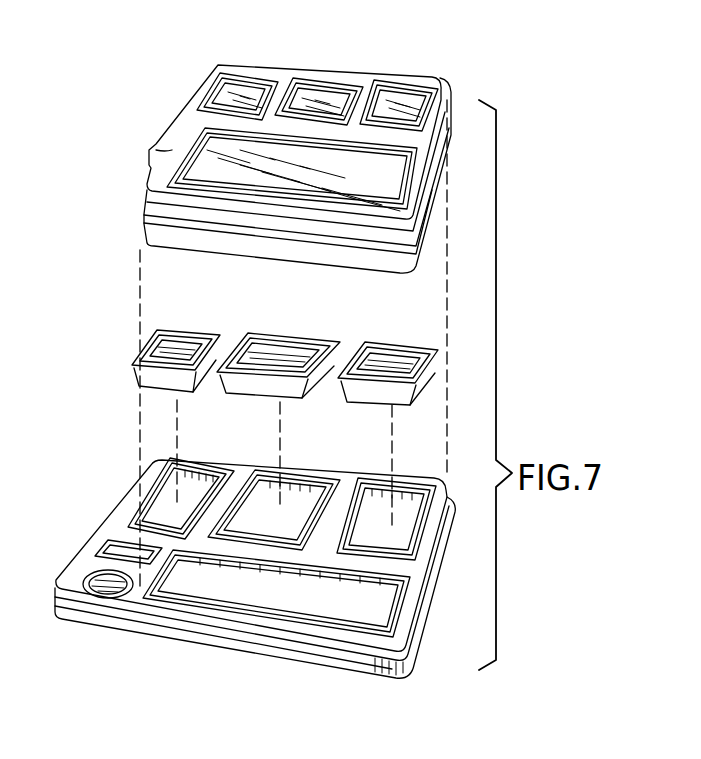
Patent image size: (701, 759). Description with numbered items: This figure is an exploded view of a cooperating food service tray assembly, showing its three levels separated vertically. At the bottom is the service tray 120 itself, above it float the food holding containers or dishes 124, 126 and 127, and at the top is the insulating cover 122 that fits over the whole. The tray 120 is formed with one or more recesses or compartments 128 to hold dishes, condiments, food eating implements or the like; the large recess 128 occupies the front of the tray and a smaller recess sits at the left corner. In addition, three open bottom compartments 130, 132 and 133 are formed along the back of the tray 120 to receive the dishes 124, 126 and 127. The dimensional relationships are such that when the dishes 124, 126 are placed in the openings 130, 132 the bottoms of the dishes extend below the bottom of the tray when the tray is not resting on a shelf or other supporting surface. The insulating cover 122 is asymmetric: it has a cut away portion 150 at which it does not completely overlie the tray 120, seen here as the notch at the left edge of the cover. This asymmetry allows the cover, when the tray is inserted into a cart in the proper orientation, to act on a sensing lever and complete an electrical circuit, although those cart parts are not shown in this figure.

The service tray 120 is at (162, 625).
The insulating cover 122 is at (362, 75).
The food holding dish 124 is at (186, 327).
The food holding dish 126 is at (297, 336).
The food holding dish 127 is at (402, 344).
The recess or compartment 128 is at (145, 588).
The open bottom compartment 130 is at (185, 497).
The open bottom compartment 132 is at (297, 510).
The open bottom compartment 133 is at (403, 512).
The cut away portion 150 is at (148, 186).